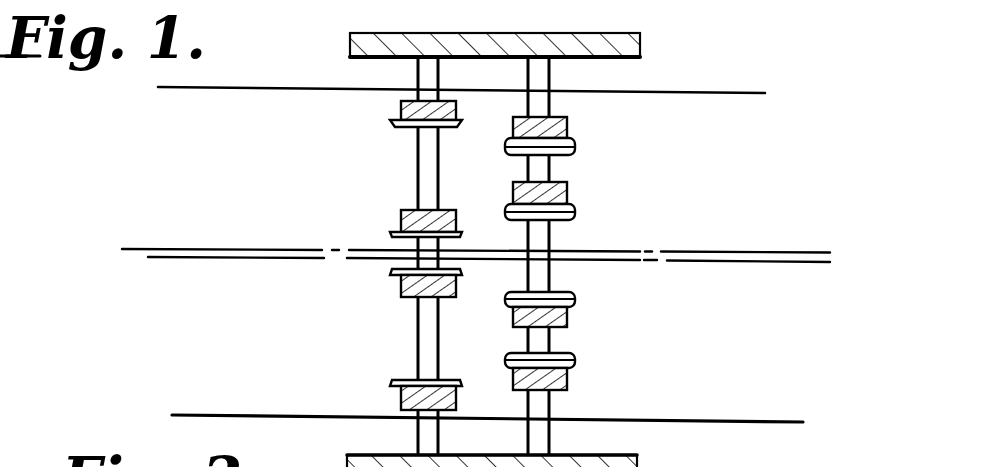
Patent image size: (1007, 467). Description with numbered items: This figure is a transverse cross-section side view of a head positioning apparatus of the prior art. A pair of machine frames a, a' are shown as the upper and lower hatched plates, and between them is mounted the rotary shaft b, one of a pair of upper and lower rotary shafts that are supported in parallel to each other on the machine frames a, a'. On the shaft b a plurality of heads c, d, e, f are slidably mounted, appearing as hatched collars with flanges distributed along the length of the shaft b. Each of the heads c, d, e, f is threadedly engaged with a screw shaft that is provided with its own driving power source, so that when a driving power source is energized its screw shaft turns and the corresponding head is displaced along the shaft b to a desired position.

The machine frame a is at (495, 28).
The machine frame a' is at (513, 449).
The upper rotary shaft b is at (425, 333).
The head c is at (401, 108).
The head d is at (401, 220).
The head e is at (401, 288).
The head f is at (401, 397).